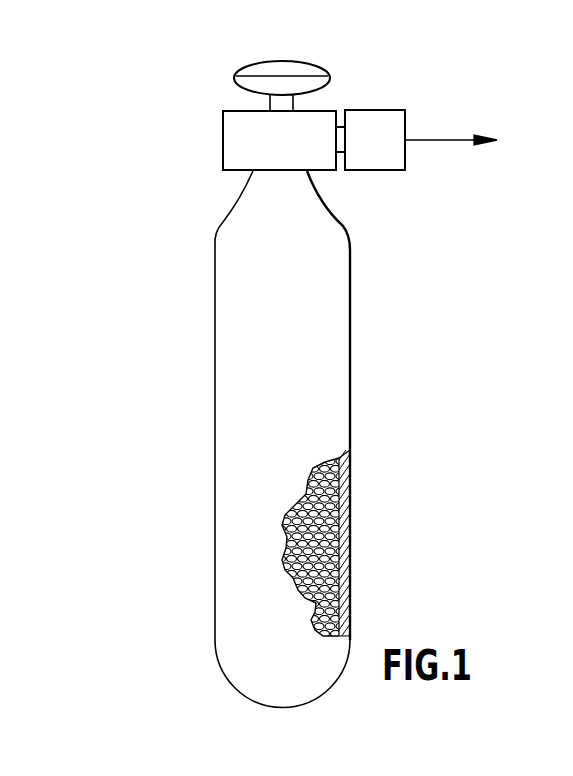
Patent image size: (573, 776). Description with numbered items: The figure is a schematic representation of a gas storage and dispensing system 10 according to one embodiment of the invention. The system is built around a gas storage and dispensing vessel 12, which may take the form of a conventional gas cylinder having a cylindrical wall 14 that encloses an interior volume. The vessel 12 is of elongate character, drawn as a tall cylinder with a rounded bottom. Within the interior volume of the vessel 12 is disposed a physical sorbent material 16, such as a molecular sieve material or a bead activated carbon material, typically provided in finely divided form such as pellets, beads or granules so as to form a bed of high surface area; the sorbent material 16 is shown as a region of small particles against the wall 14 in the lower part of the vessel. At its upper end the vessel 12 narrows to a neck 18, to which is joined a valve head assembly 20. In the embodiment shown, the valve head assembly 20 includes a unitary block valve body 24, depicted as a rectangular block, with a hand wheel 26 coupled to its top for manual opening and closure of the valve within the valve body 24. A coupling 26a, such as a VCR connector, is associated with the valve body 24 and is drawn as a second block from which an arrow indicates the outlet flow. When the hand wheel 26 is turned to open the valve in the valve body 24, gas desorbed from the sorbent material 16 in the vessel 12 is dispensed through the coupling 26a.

The gas storage and dispensing system 10 is at (167, 302).
The gas storage and dispensing vessel 12 is at (214, 492).
The cylindrical wall 14 is at (347, 471).
The physical sorbent material 16 is at (323, 537).
The neck 18 is at (285, 175).
The valve head assembly 20 is at (223, 140).
The unitary block valve body 24 is at (325, 120).
The hand wheel 26 is at (283, 60).
The coupling 26a is at (378, 118).